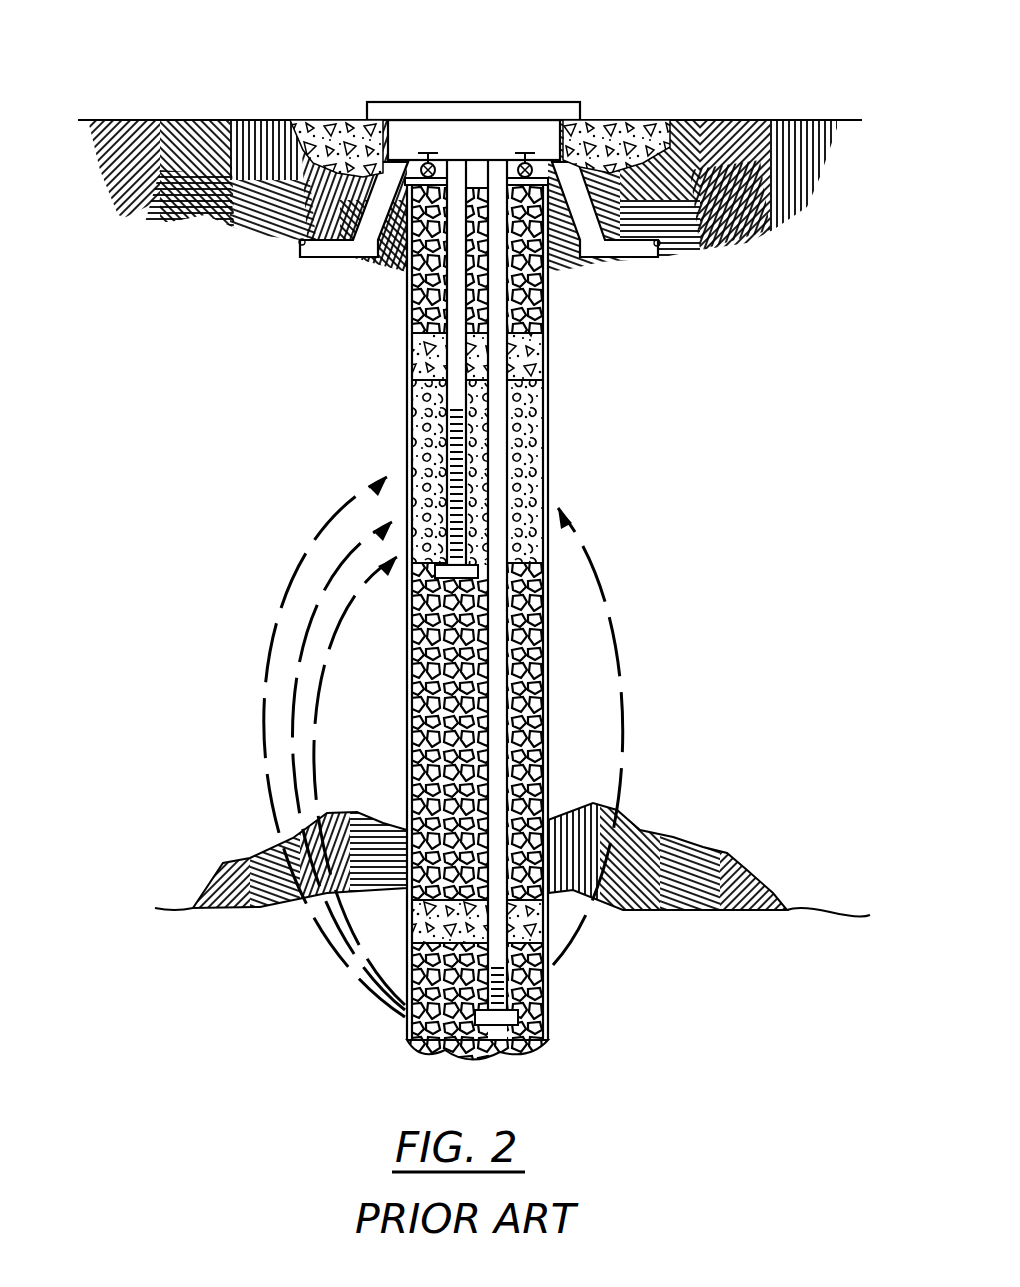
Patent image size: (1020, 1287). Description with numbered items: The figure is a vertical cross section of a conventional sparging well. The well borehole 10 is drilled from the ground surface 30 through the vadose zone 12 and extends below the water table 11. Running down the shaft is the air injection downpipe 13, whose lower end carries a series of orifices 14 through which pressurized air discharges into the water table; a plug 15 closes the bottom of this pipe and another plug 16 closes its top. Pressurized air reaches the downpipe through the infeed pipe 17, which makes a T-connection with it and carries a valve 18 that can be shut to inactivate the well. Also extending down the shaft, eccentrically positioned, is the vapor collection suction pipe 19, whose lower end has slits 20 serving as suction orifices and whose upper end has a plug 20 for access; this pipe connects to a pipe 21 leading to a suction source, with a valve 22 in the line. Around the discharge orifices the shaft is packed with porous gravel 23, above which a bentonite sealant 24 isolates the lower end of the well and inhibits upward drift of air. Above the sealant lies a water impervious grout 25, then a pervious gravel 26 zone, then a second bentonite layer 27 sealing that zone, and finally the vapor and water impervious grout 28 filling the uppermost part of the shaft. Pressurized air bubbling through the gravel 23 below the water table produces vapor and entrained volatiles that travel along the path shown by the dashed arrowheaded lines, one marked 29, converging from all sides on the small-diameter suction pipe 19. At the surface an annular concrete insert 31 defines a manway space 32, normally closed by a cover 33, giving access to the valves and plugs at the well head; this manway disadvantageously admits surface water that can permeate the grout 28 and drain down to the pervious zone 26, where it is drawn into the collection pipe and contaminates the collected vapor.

The well borehole 10 is at (552, 689).
The water table 11 is at (800, 908).
The vadose zone 12 is at (746, 557).
The air injection downpipe 13 is at (495, 472).
The orifices 14 is at (508, 979).
The plug 15 is at (518, 1016).
The plug 16 is at (538, 120).
The pressurized air infeed pipe 17 is at (660, 250).
The valve 18 is at (615, 120).
The vapor collection suction pipe 19 is at (453, 355).
The slits 20 is at (463, 437).
The pipe 21 is at (333, 247).
The valve 22 is at (408, 158).
The gravel 23 is at (405, 1015).
The sealant 24 is at (545, 924).
The water impervious grout 25 is at (413, 732).
The gravel 26 is at (537, 430).
The bentonite layer 27 is at (540, 356).
The grout 28 is at (410, 313).
The dashed arrowheaded line 29 is at (266, 659).
The ground surface 30 is at (113, 137).
The annular concrete insert 31 is at (333, 135).
The manway space 32 is at (430, 134).
The cover 33 is at (583, 108).